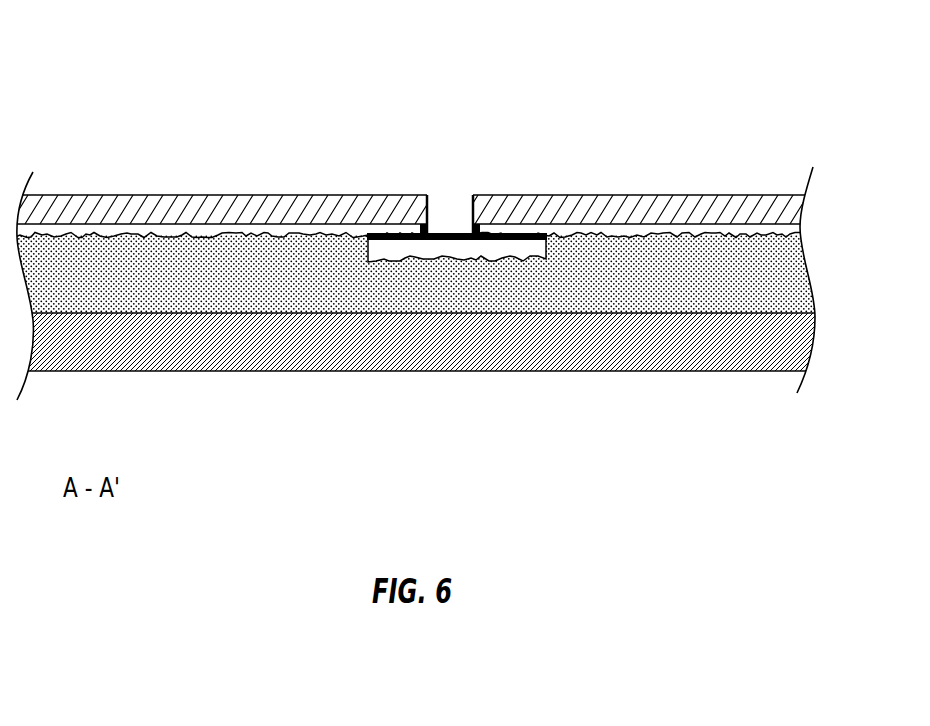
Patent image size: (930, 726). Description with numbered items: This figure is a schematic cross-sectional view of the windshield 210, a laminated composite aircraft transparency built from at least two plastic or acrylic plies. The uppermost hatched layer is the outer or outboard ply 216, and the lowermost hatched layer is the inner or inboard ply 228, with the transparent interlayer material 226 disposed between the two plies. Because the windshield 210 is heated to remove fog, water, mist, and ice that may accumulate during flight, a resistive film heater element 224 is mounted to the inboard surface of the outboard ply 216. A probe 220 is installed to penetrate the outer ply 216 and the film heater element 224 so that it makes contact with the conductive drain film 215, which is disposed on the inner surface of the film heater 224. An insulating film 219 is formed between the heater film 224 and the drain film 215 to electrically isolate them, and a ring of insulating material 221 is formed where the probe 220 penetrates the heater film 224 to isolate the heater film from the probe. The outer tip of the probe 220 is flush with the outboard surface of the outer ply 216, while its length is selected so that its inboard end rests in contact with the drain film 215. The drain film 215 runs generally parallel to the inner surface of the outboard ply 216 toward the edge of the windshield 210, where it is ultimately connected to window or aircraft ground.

The windshield 210 is at (710, 85).
The conductive drain film 215 is at (405, 247).
The outboard ply 216 is at (111, 215).
The insulating film 219 is at (522, 232).
The probe 220 is at (450, 213).
The ring of insulating material 221 is at (502, 223).
The resistive film heater element 224 is at (205, 234).
The transparent interlayer material 226 is at (621, 285).
The inboard ply 228 is at (314, 340).